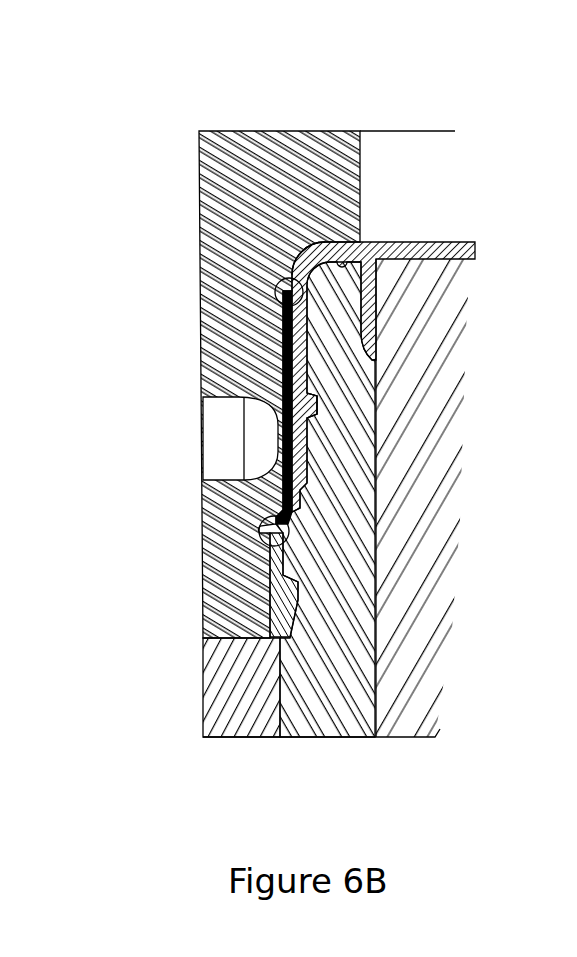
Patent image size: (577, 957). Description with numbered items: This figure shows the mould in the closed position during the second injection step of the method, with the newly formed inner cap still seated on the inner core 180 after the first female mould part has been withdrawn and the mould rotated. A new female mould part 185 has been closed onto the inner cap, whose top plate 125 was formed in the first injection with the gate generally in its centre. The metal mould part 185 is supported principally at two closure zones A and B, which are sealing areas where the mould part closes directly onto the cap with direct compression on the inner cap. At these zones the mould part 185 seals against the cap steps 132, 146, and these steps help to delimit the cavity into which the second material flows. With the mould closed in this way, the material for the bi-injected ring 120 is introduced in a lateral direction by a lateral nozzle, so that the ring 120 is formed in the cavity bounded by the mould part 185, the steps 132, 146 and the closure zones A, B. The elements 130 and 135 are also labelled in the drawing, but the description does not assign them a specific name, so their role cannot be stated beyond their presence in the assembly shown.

The female mould part 185 is at (199, 152).
The top plate 125 is at (437, 241).
The cap step 132 is at (289, 289).
The bi-injected ring 120 is at (281, 377).
The retention nub 130 is at (304, 394).
The cap step 146 is at (266, 521).
The outer body 135 is at (376, 316).
The inner core 180 is at (336, 740).
The closure zone A is at (276, 294).
The closure zone B is at (259, 534).